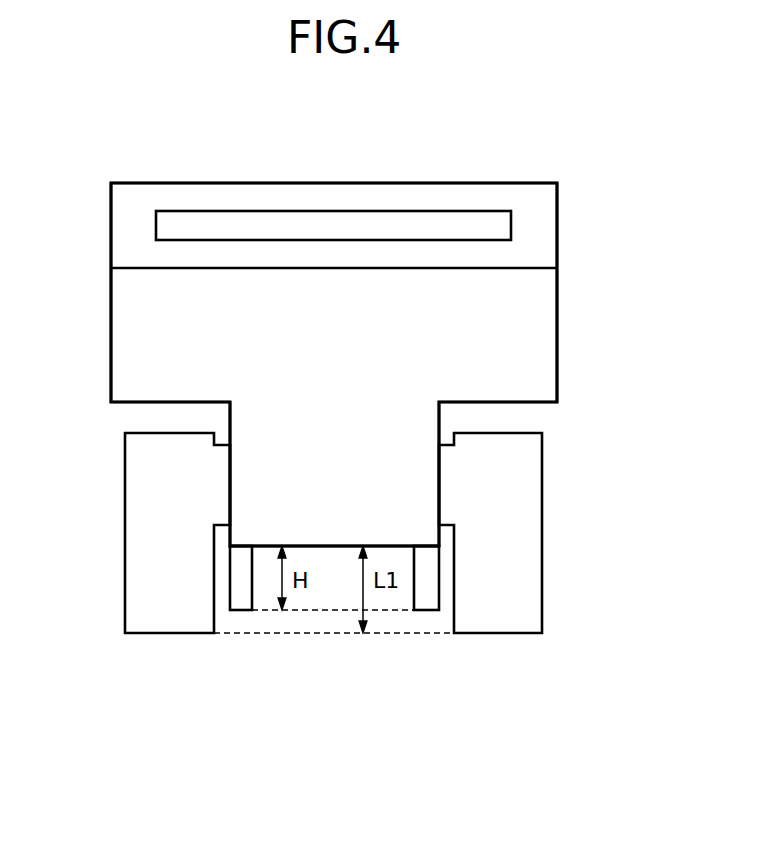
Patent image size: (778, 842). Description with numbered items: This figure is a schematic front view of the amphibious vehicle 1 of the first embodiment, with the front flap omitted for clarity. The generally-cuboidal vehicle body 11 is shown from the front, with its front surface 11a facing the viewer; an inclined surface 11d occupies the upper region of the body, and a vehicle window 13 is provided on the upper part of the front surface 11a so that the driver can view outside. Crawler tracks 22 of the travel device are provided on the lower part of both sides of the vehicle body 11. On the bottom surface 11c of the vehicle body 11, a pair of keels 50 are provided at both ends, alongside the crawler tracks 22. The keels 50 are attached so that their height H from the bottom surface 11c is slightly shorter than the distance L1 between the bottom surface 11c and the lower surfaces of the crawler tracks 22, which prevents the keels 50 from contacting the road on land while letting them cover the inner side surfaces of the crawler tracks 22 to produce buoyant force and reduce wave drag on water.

The amphibious vehicle 1 is at (471, 164).
The vehicle body 11 is at (557, 296).
The front surface 11a is at (540, 356).
The bottom surface 11c is at (333, 547).
The inclined surface 11d is at (542, 199).
The vehicle window 13 is at (511, 228).
The crawler tracks 22 is at (125, 447).
The keels 50 is at (240, 611).